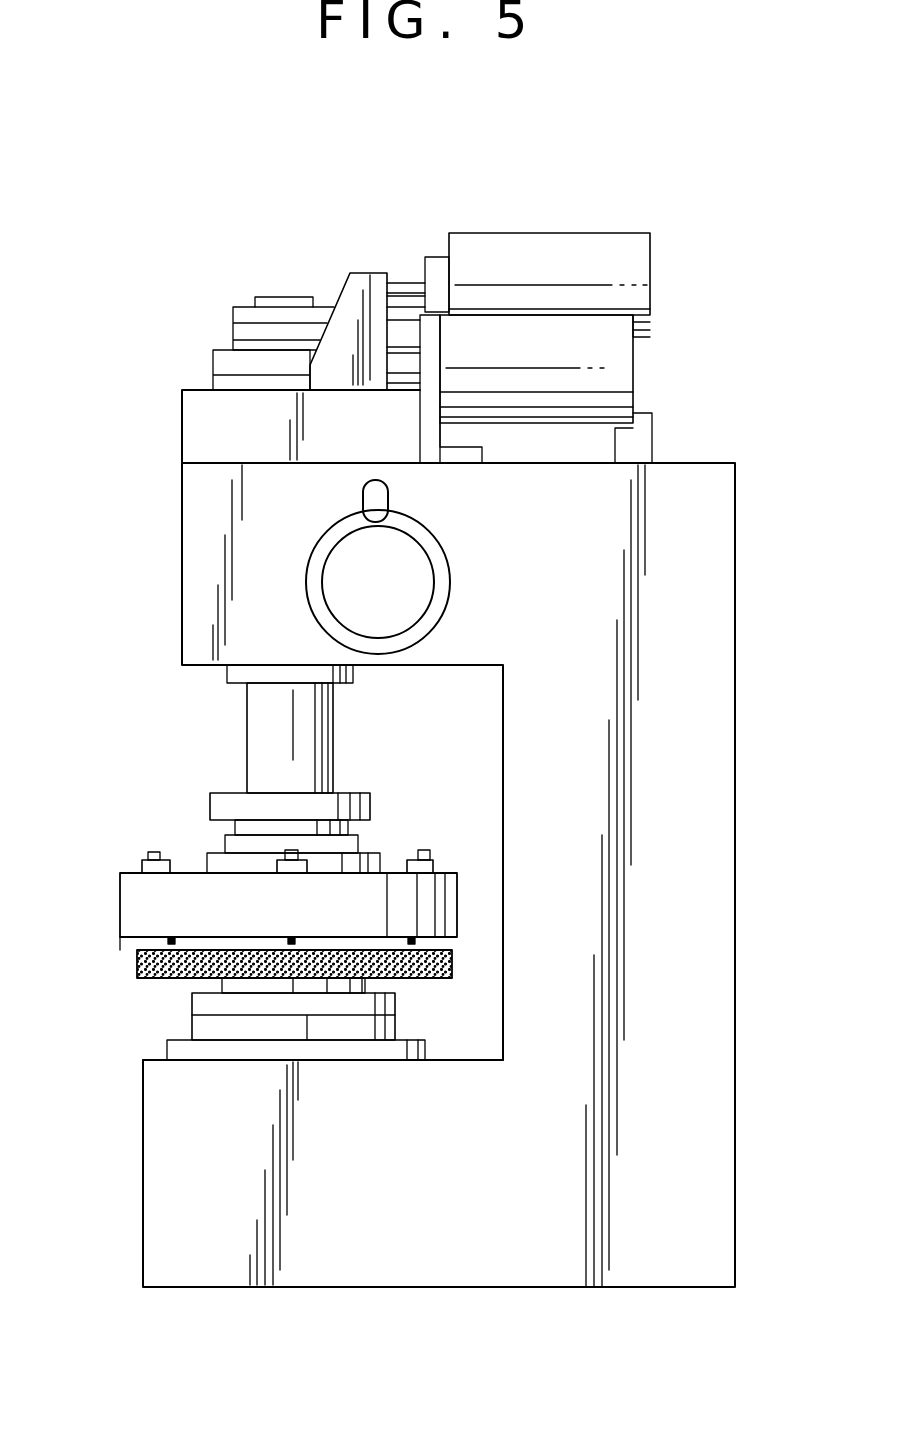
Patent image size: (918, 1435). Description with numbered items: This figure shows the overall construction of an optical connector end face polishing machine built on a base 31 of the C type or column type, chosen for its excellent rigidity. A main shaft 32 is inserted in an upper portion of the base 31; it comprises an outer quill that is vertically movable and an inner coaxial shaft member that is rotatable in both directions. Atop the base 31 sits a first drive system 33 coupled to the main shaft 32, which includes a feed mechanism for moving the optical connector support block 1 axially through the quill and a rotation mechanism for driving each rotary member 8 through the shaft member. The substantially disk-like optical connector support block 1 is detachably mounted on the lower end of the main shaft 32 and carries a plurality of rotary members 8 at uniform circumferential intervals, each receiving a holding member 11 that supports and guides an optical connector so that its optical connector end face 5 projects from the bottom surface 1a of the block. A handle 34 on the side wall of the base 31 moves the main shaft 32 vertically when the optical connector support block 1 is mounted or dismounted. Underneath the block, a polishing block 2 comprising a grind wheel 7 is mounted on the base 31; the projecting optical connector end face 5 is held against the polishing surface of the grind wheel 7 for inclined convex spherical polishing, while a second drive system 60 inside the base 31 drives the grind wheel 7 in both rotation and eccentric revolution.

The optical connector support block 1 is at (120, 903).
The bottom surface of optical connector support block 1a is at (132, 938).
The polishing block 2 is at (400, 1025).
The optical connector end face 5 is at (415, 943).
The grind wheel 7 is at (448, 968).
The rotary member 8 is at (142, 868).
The holding member 11 is at (152, 852).
The base 31 is at (700, 488).
The main shaft 32 is at (263, 716).
The first drive system 33 is at (380, 258).
The handle 34 is at (312, 568).
The second drive system 60 is at (325, 1066).